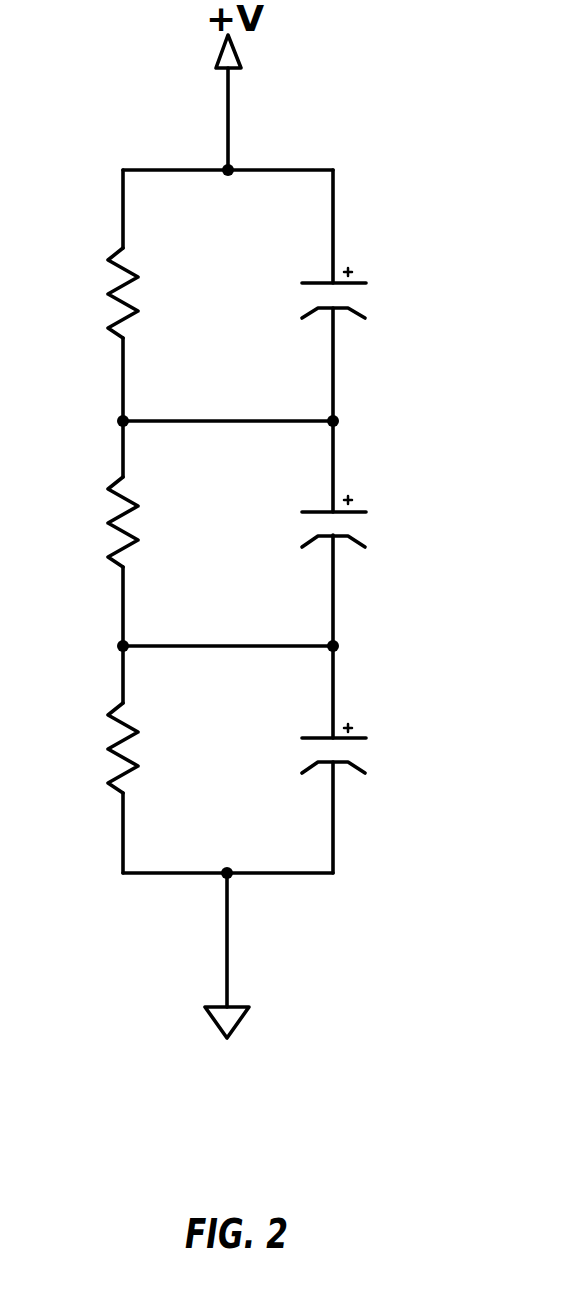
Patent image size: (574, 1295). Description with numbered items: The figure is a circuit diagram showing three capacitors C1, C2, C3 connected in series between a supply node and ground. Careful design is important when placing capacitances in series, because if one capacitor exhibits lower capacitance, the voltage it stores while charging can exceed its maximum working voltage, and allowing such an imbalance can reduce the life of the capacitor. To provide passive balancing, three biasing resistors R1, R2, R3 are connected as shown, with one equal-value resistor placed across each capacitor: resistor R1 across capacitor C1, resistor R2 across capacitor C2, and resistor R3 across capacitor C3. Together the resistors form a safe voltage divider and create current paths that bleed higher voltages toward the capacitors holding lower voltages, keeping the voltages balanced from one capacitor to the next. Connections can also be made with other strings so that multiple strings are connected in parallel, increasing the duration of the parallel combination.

The biasing resistor R1 is at (153, 293).
The biasing resistor R2 is at (153, 522).
The biasing resistor R3 is at (153, 748).
The capacitor C1 is at (350, 274).
The capacitor C2 is at (350, 503).
The capacitor C3 is at (350, 730).